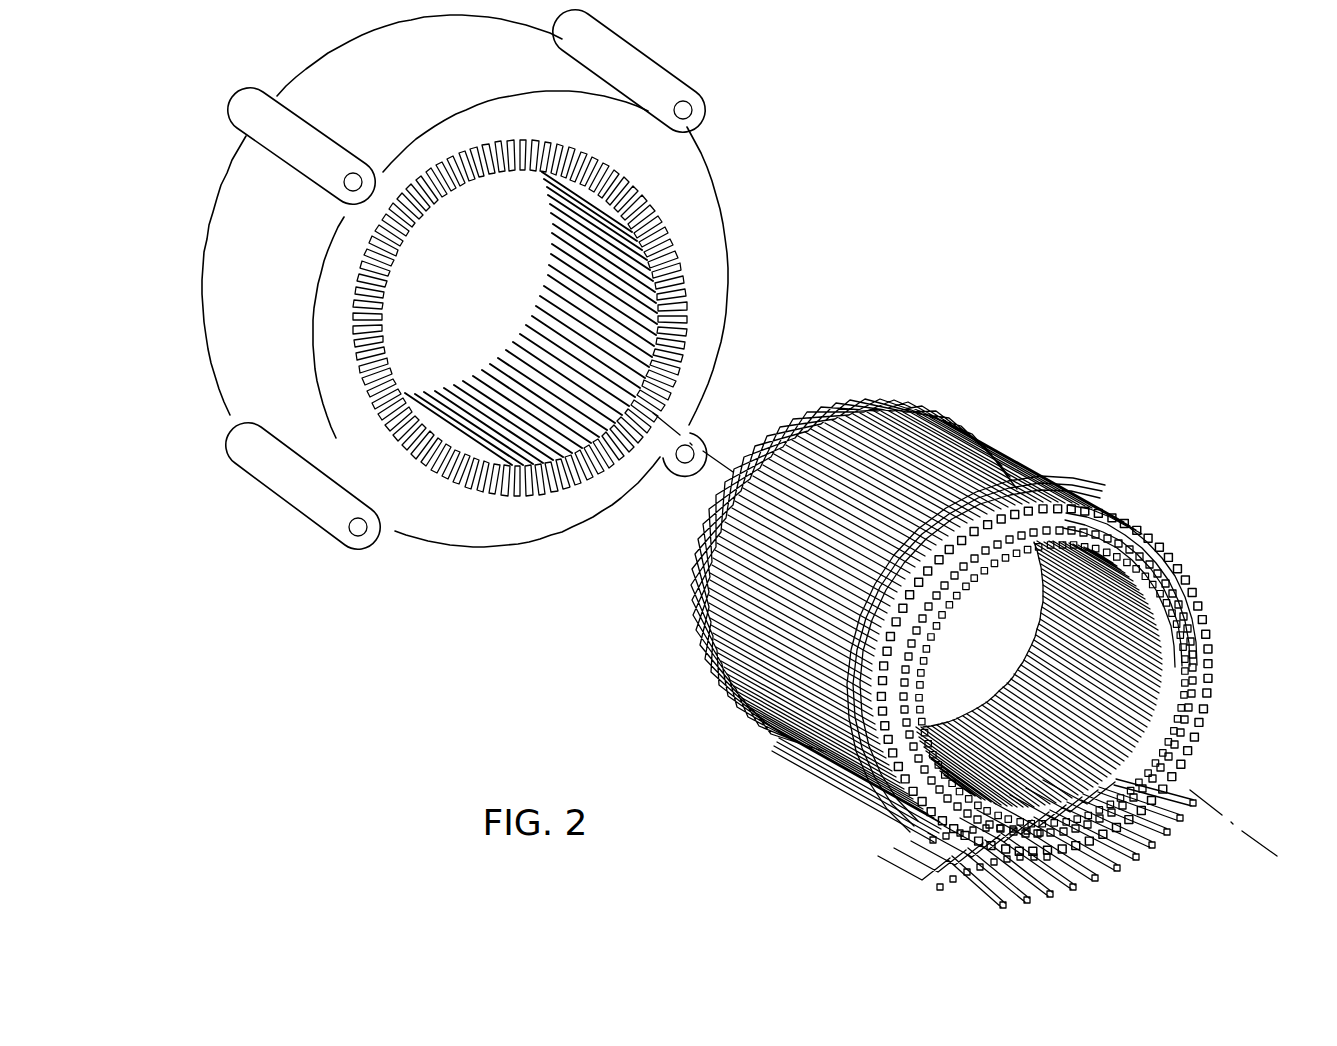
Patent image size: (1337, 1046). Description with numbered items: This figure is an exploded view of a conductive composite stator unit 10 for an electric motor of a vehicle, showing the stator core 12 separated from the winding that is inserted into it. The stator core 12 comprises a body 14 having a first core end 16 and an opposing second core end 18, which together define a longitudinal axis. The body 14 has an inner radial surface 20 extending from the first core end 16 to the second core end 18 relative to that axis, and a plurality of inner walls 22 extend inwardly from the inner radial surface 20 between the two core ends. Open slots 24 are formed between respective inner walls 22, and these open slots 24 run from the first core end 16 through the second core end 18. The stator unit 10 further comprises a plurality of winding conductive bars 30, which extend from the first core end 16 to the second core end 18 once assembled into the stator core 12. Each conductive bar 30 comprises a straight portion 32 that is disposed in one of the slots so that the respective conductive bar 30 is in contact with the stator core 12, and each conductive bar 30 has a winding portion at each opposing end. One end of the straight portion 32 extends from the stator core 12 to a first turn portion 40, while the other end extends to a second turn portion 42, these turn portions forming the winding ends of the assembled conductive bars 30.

The stator unit 10 is at (971, 247).
The stator core 12 is at (278, 325).
The body 14 is at (233, 360).
The first core end 16 is at (208, 236).
The second core end 18 is at (691, 186).
The inner radial surface 20 is at (596, 356).
The inner walls 22 is at (673, 291).
The open slots 24 is at (673, 254).
The conductive bars 30 is at (1139, 503).
The straight portion 32 is at (1030, 452).
The first turn portion 40 is at (882, 397).
The second turn portion 42 is at (1180, 660).